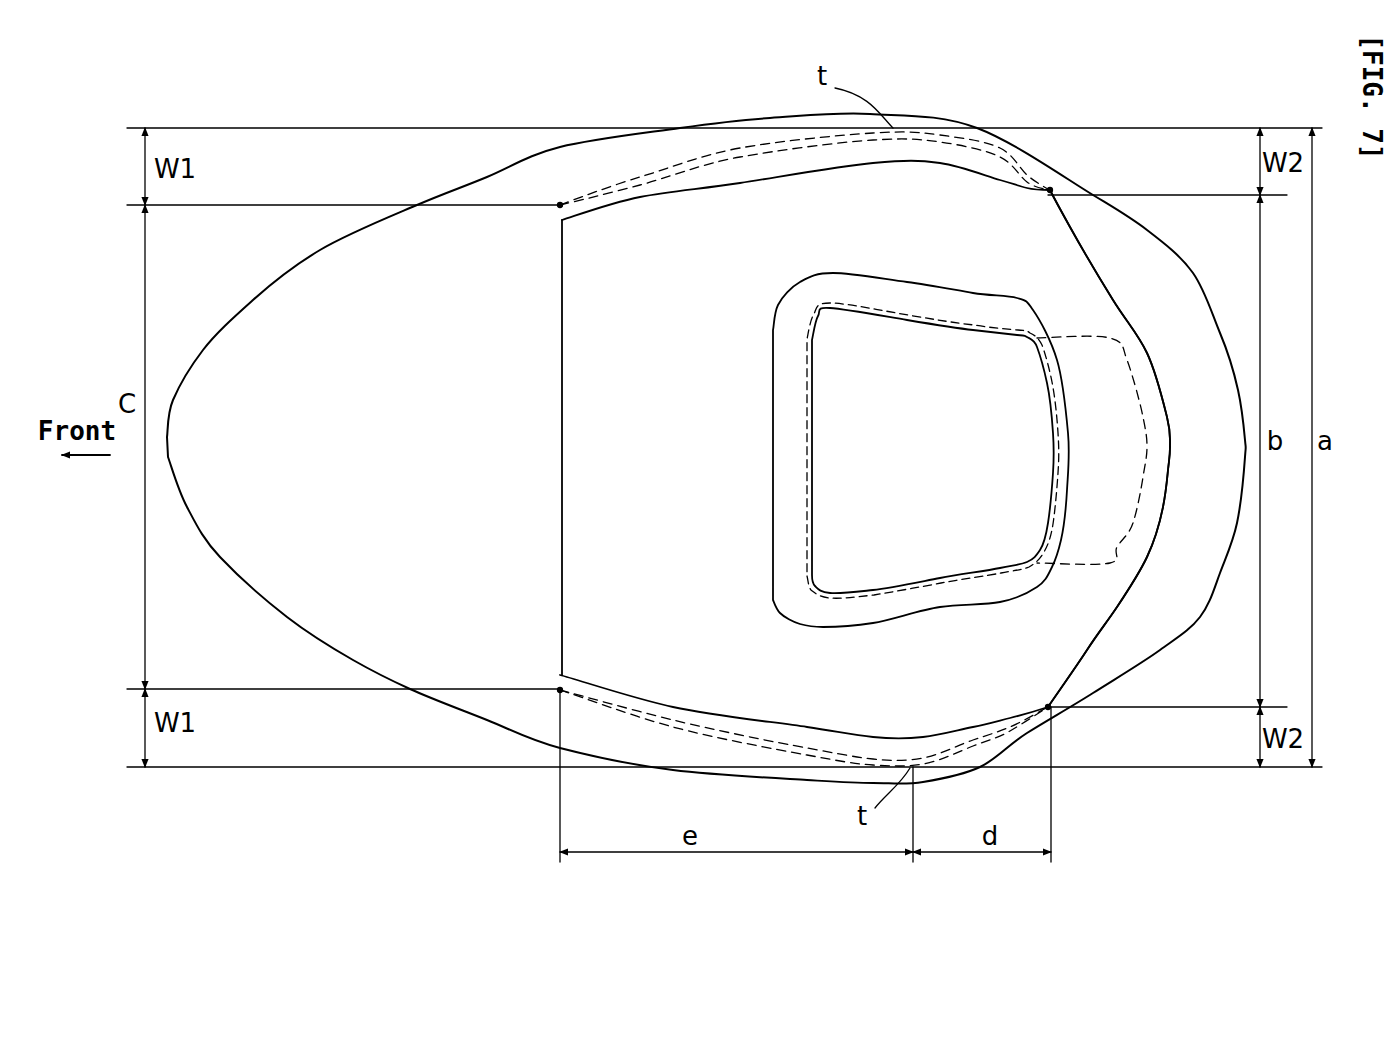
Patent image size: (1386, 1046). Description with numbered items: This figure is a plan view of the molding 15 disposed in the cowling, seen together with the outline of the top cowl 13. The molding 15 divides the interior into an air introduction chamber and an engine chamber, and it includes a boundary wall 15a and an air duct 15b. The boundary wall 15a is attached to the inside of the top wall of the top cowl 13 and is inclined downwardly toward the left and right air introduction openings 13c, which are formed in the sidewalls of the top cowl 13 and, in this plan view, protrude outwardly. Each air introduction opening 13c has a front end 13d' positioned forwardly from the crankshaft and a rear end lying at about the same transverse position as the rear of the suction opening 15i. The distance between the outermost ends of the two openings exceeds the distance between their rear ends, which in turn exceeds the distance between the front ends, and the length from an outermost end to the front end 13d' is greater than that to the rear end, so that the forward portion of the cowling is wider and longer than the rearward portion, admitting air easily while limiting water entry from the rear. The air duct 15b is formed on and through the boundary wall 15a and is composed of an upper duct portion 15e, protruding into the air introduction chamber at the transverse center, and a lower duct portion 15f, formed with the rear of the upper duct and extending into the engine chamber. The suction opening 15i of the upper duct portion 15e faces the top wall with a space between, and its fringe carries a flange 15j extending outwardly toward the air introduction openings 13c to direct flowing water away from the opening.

The top cowl 13 is at (557, 150).
The air introduction opening 13c is at (736, 157).
The front end 13d' is at (509, 448).
The molding 15 is at (965, 453).
The boundary wall 15a is at (1090, 280).
The air duct 15b is at (1060, 567).
The upper duct portion 15e is at (938, 578).
The lower duct portion 15f is at (1103, 567).
The suction opening 15i is at (862, 577).
The flange 15j is at (768, 503).